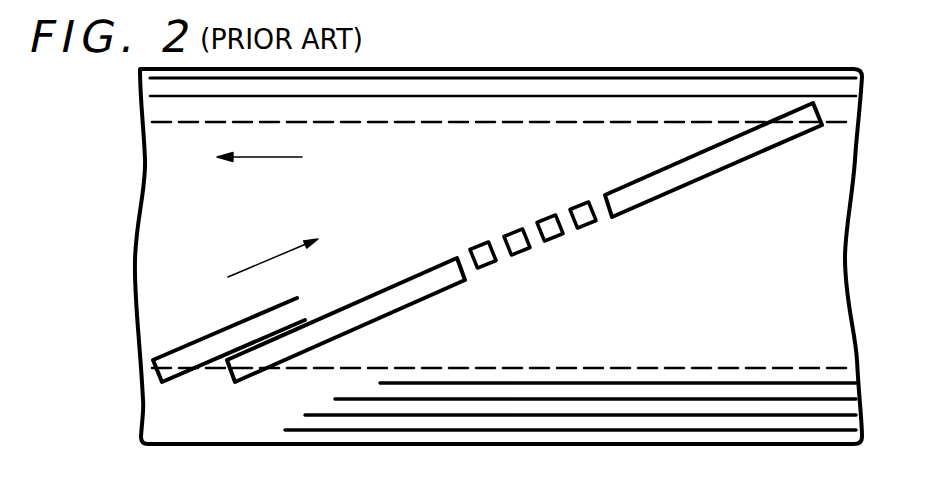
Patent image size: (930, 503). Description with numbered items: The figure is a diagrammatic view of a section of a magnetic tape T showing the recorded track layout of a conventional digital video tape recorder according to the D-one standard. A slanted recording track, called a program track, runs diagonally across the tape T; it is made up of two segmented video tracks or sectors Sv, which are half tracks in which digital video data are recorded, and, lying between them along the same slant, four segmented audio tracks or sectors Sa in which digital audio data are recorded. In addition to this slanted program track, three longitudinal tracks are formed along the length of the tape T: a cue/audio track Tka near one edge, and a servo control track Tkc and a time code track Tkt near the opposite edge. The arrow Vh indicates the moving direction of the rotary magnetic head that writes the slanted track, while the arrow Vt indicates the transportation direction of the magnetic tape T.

The magnetic tape T is at (660, 68).
The cue/audio track Tka is at (757, 88).
The servo control track Tkc is at (718, 392).
The time code track Tkt is at (825, 420).
The segmented video tracks Sv is at (417, 302).
The segmented audio tracks Sa is at (538, 253).
The transportation direction of the magnetic tape Vt is at (246, 158).
The moving direction of the magnetic head Vh is at (293, 248).